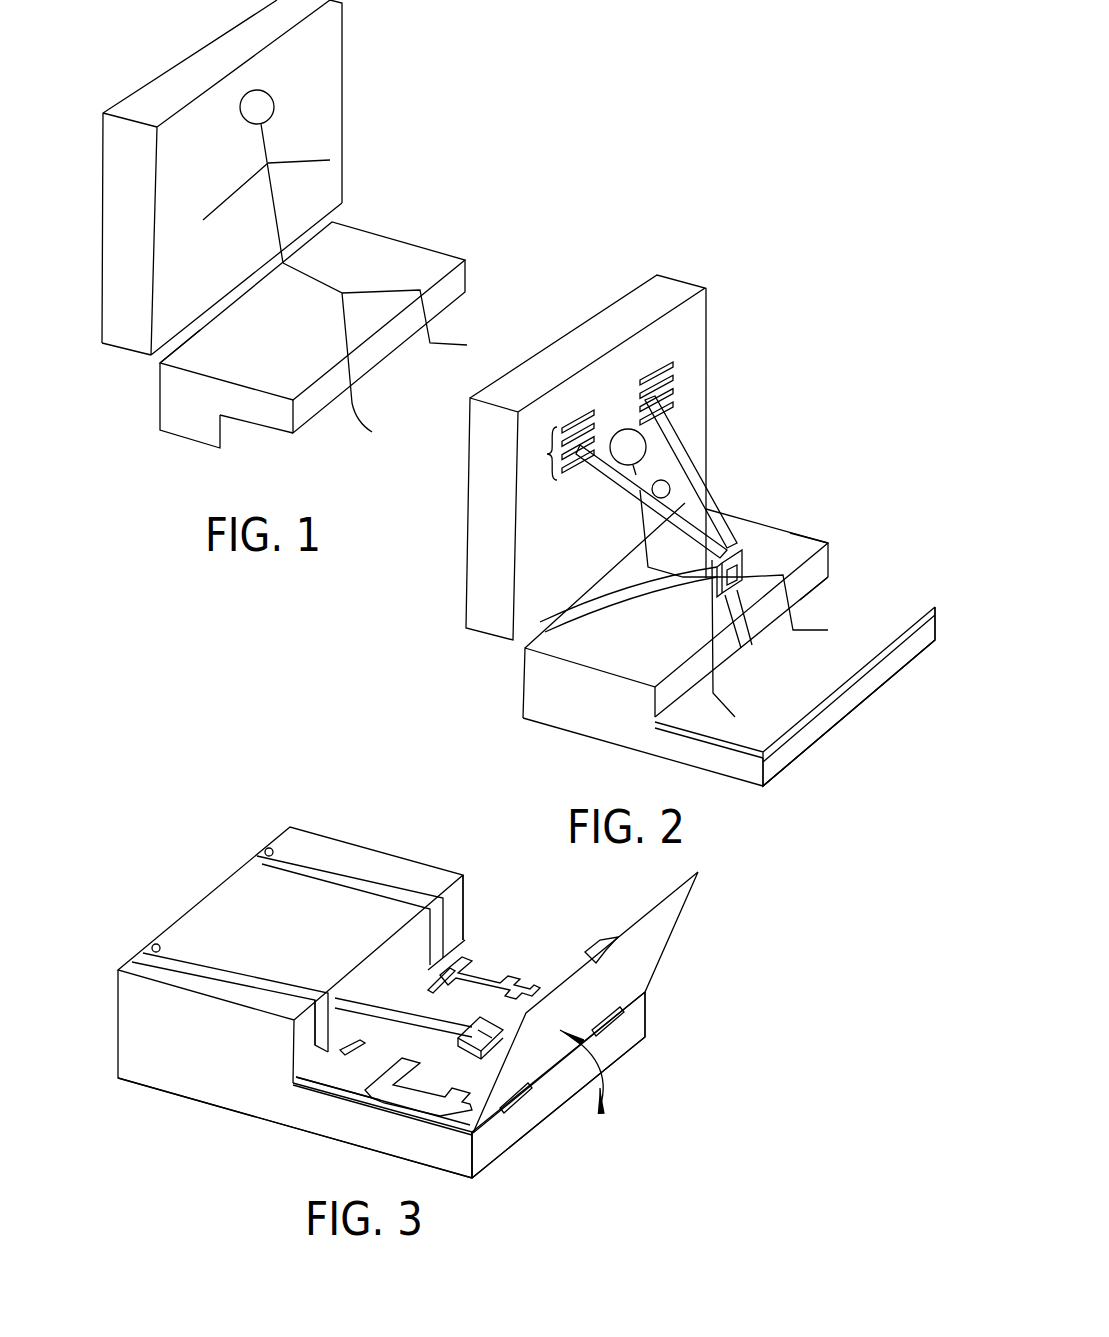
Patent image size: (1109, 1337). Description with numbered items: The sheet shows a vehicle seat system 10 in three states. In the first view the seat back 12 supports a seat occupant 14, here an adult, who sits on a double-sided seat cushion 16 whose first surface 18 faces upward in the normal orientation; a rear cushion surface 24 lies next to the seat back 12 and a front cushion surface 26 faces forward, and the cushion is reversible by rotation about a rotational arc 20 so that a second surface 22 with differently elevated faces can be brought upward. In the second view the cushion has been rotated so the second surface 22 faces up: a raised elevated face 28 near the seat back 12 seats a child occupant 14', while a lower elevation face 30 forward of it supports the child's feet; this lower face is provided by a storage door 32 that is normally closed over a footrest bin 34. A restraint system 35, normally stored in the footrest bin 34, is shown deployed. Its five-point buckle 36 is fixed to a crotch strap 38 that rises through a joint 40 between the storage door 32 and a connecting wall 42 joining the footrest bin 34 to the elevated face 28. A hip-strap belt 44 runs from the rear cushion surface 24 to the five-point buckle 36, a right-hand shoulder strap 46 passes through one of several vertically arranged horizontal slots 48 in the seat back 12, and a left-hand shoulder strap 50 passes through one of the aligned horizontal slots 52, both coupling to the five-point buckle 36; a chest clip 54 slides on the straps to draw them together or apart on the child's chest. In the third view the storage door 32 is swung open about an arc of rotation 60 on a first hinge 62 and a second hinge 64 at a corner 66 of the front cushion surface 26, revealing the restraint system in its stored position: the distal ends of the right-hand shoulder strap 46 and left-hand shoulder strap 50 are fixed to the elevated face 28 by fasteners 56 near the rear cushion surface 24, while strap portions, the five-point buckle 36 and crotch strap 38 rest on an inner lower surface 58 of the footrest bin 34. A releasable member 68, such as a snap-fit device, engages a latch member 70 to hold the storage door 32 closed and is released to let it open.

In FIG. 1, the vehicle seat system 10 is at (443, 120).
In FIG. 2, the vehicle seat system 10 is at (821, 352).
In FIG. 1, the seat back 12 is at (320, 57).
In FIG. 2, the seat back 12 is at (688, 336).
In FIG. 1, the seat occupant 14 is at (335, 261).
In FIG. 1, the child occupant 14' is at (335, 261).
In FIG. 2, the child occupant 14' is at (719, 552).
In FIG. 1, the seat cushion 16 is at (286, 331).
In FIG. 2, the seat cushion 16 is at (700, 622).
In FIG. 3, the seat cushion 16 is at (388, 992).
In FIG. 1, the first surface 18 is at (363, 241).
In FIG. 1, the rotational arc 20 is at (206, 450).
In FIG. 1, the second surface 22 is at (264, 432).
In FIG. 2, the second surface 22 is at (798, 527).
In FIG. 1, the rear cushion surface 24 is at (207, 362).
In FIG. 2, the rear cushion surface 24 is at (521, 675).
In FIG. 3, the rear cushion surface 24 is at (119, 1001).
In FIG. 1, the front cushion surface 26 is at (313, 409).
In FIG. 2, the front cushion surface 26 is at (814, 730).
In FIG. 3, the front cushion surface 26 is at (553, 1102).
In FIG. 2, the elevated face 28 is at (553, 646).
In FIG. 3, the elevated face 28 is at (352, 858).
In FIG. 2, the lower elevation face 30 is at (789, 675).
In FIG. 2, the storage door 32 is at (687, 733).
In FIG. 3, the storage door 32 is at (668, 918).
In FIG. 2, the footrest bin 34 is at (713, 748).
In FIG. 3, the footrest bin 34 is at (403, 1109).
In FIG. 2, the restraint system 35 is at (693, 598).
In FIG. 2, the five-point buckle 36 is at (745, 575).
In FIG. 3, the five-point buckle 36 is at (601, 1108).
In FIG. 2, the crotch strap 38 is at (802, 538).
In FIG. 3, the crotch strap 38 is at (413, 1013).
In FIG. 2, the joint 40 is at (820, 598).
In FIG. 2, the connecting wall 42 is at (818, 562).
In FIG. 3, the connecting wall 42 is at (458, 902).
In FIG. 2, the hip-strap belt 44 is at (630, 599).
In FIG. 2, the right-hand shoulder strap 46 is at (626, 478).
In FIG. 3, the right-hand shoulder strap 46 is at (318, 1102).
In FIG. 2, the horizontal slots 48 is at (558, 445).
In FIG. 2, the left-hand shoulder strap 50 is at (681, 446).
In FIG. 3, the left-hand shoulder strap 50 is at (497, 975).
In FIG. 2, the horizontal slots 52 is at (681, 392).
In FIG. 2, the chest clip 54 is at (672, 482).
In FIG. 3, the fastener 56 is at (267, 850).
In FIG. 3, the inner lower surface 58 is at (381, 1099).
In FIG. 3, the arc of rotation 60 is at (592, 1067).
In FIG. 3, the first hinge 62 is at (522, 1100).
In FIG. 3, the second hinge 64 is at (612, 1023).
In FIG. 3, the corner 66 is at (475, 1137).
In FIG. 3, the releasable member 68 is at (600, 940).
In FIG. 3, the latch member 70 is at (388, 1003).